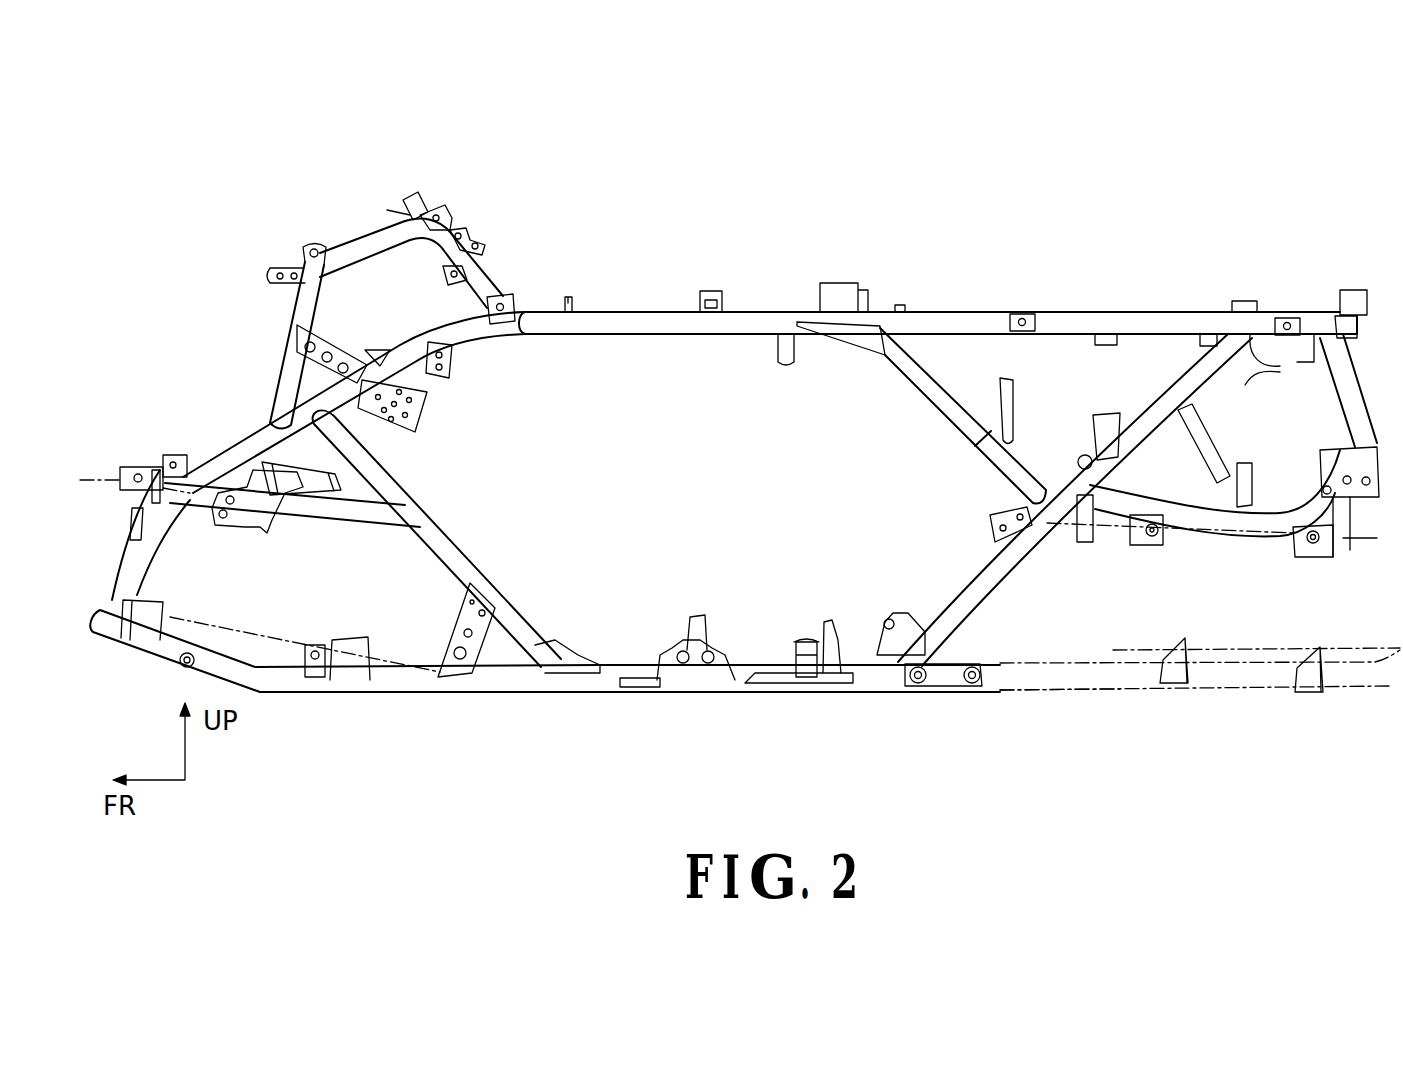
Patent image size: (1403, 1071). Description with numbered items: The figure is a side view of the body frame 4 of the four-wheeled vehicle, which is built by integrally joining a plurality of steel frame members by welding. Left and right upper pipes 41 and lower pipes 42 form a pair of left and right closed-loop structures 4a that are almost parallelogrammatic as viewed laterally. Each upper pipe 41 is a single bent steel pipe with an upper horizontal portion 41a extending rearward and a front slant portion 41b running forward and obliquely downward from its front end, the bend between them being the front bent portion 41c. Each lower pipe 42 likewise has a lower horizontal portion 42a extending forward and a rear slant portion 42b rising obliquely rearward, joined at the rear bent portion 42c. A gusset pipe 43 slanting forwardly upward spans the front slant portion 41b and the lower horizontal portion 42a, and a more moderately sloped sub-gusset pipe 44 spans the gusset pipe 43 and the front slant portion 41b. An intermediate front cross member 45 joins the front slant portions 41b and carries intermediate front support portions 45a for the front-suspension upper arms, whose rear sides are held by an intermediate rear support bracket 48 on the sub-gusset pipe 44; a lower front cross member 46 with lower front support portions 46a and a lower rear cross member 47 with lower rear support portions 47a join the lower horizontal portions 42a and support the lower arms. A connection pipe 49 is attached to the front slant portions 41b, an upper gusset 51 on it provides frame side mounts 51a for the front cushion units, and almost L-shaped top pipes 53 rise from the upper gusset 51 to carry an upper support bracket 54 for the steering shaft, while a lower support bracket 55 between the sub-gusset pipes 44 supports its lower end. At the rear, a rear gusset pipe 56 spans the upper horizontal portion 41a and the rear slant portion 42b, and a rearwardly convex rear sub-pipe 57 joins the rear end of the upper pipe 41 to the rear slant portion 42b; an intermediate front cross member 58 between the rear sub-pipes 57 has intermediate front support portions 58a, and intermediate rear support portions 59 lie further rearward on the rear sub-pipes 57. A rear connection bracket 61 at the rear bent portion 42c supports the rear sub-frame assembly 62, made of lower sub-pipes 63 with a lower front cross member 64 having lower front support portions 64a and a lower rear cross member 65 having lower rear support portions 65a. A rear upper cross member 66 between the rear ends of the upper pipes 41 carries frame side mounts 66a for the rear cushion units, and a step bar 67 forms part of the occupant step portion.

The body frame 4 is at (943, 235).
The closed-loop structure 4a is at (943, 264).
The upper pipe 41 is at (938, 256).
The upper horizontal portion 41a is at (667, 310).
The front slant portion 41b is at (243, 440).
The front bent portion 41c is at (505, 293).
The lower pipe 42 is at (545, 698).
The lower horizontal portion 42a is at (510, 683).
The rear slant portion 42b is at (1003, 570).
The rear bent portion 42c is at (886, 680).
The gusset pipe 43 is at (457, 542).
The sub-gusset pipe 44 is at (357, 520).
The intermediate front cross member 45 is at (135, 433).
The intermediate front support portion 45a is at (147, 457).
The lower front cross member 46 is at (195, 594).
The lower front support portion 46a is at (153, 597).
The lower rear cross member 47 is at (377, 630).
The lower rear support portion 47a is at (370, 645).
The intermediate rear support bracket 48 is at (275, 522).
The connection pipe 49 is at (283, 353).
The upper gusset 51 is at (255, 215).
The frame side mount 51a is at (307, 267).
The top pipe 53 is at (366, 228).
The upper support bracket 54 is at (433, 200).
The lower support bracket 55 is at (315, 472).
The rear gusset pipe 56 is at (915, 390).
The rear sub-pipe 57 is at (1355, 385).
The intermediate front cross member 58 is at (1170, 541).
The intermediate front support portion 58a is at (1128, 537).
The intermediate rear support portion 59 is at (1318, 560).
The rear connection bracket 61 is at (940, 687).
The rear sub-frame assembly 62 is at (1211, 695).
The lower sub-pipe 63 is at (1125, 690).
The lower front cross member 64 is at (1194, 634).
The lower front support portion 64a is at (1180, 636).
The lower rear cross member 65 is at (1300, 648).
The lower rear support portion 65a is at (1315, 653).
The rear upper cross member 66 is at (1215, 435).
The frame side mount 66a is at (1283, 340).
The step bar 67 is at (802, 640).